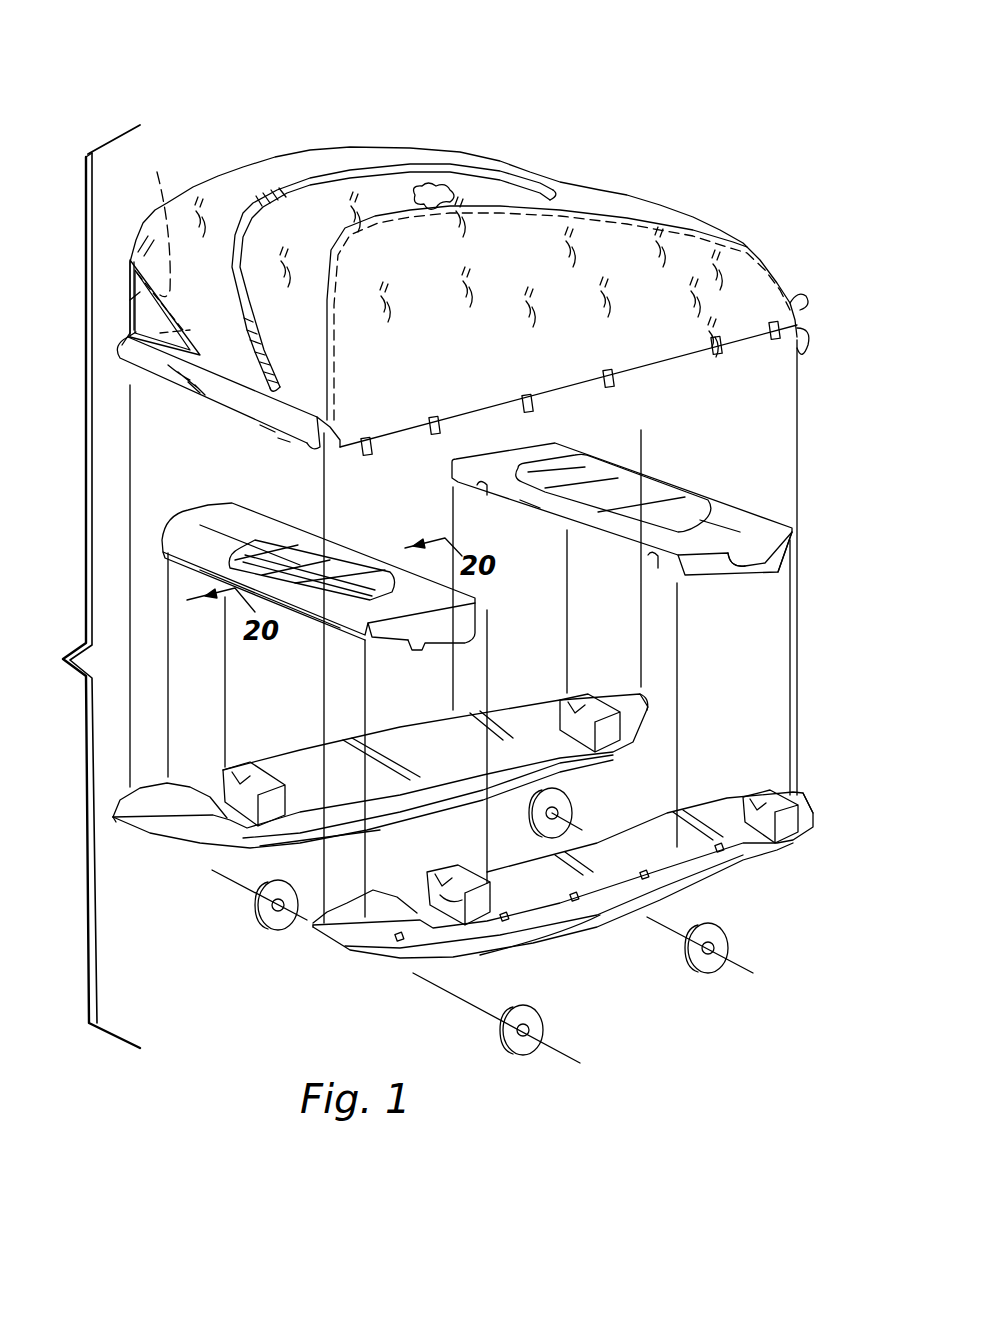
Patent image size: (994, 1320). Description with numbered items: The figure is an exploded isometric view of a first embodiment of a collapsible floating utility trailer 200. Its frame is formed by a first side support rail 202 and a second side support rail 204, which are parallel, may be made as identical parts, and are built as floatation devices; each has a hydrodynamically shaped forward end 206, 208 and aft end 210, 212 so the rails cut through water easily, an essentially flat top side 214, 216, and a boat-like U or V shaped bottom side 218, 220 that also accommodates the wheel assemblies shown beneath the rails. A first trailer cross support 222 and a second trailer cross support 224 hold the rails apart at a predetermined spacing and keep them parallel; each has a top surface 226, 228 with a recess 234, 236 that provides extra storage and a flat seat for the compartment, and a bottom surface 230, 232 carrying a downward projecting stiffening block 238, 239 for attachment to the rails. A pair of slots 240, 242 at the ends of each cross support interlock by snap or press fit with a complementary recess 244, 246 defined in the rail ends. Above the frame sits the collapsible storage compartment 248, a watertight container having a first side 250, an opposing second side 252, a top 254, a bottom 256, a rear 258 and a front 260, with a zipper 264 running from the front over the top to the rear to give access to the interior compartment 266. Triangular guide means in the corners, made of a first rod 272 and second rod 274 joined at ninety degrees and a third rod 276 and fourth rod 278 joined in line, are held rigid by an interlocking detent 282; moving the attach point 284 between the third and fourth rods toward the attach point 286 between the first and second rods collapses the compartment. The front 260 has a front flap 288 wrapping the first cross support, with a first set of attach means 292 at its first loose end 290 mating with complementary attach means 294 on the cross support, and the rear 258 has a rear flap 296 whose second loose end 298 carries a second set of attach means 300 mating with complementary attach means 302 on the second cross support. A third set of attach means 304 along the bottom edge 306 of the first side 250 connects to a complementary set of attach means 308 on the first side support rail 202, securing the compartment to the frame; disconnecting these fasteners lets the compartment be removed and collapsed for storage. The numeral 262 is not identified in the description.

The collapsible floating utility trailer 200 is at (70, 657).
The first side support rail 202 is at (723, 873).
The second side support rail 204 is at (640, 727).
The forward end 206 is at (313, 930).
The forward end 208 is at (118, 815).
The aft end 210 is at (805, 797).
The aft end 212 is at (640, 695).
The top side 214 is at (687, 833).
The top side 216 is at (503, 723).
The bottom side 218 is at (527, 947).
The bottom side 220 is at (387, 827).
The first trailer cross support 222 is at (192, 518).
The second trailer cross support 224 is at (680, 487).
The top surface 226 is at (233, 528).
The top surface 228 is at (710, 530).
The bottom surface 230 is at (403, 647).
The bottom surface 232 is at (687, 580).
The recess 234 is at (328, 550).
The recess 236 is at (607, 495).
The stiffening block 238 is at (460, 627).
The stiffening block 239 is at (530, 513).
The slot 240 is at (477, 490).
The slot 242 is at (265, 537).
The recess 244 is at (413, 907).
The recess 246 is at (570, 730).
The collapsible storage compartment 248 is at (627, 187).
The first side 250 is at (730, 267).
The second side 252 is at (180, 197).
The top 254 is at (313, 158).
The bottom 256 is at (562, 328).
The rear 258 is at (798, 296).
The front 260 is at (233, 392).
The rear hoop 262 is at (640, 365).
The zipper 264 is at (510, 180).
The interior compartment 266 is at (433, 197).
The first rod 272 is at (146, 223).
The second rod 274 is at (190, 330).
The third rod 276 is at (160, 357).
The fourth rod 278 is at (132, 298).
The interlocking detent 282 is at (130, 262).
The attach point 284 is at (128, 337).
The attach point 286 is at (222, 300).
The front flap 288 is at (283, 437).
The first loose end 290 is at (320, 440).
The first set of attach means 292 is at (270, 430).
The complementary attach means 294 is at (340, 630).
The rear flap 296 is at (803, 350).
The second loose end 298 is at (783, 342).
The second set of attach means 300 is at (720, 357).
The complementary attach means 302 is at (783, 540).
The third set of attach means 304 is at (367, 453).
The bottom edge 306 is at (470, 417).
The complementary set of attach means 308 is at (407, 940).